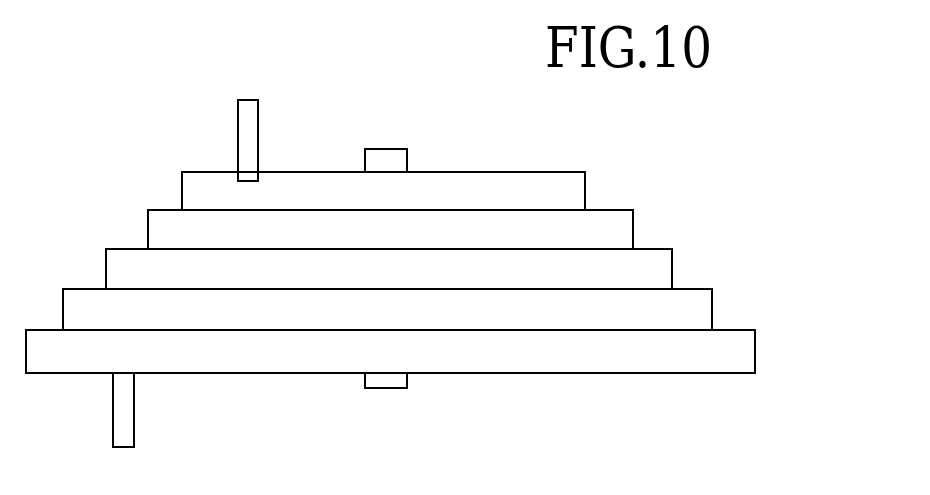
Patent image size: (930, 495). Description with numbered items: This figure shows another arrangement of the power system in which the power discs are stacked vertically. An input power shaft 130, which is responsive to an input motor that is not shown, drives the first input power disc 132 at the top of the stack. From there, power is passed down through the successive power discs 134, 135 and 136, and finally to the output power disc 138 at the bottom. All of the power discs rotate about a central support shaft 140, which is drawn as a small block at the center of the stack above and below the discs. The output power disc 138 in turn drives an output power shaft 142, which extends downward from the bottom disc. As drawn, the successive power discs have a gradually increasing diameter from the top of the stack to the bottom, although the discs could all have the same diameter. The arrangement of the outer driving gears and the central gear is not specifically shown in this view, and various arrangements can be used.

The input power shaft 130 is at (258, 128).
The first input power disc 132 is at (497, 174).
The power disc 134 is at (620, 229).
The power disc 135 is at (660, 265).
The power disc 136 is at (702, 303).
The output power disc 138 is at (740, 350).
The central support shaft 140 is at (405, 387).
The output power shaft 142 is at (130, 415).